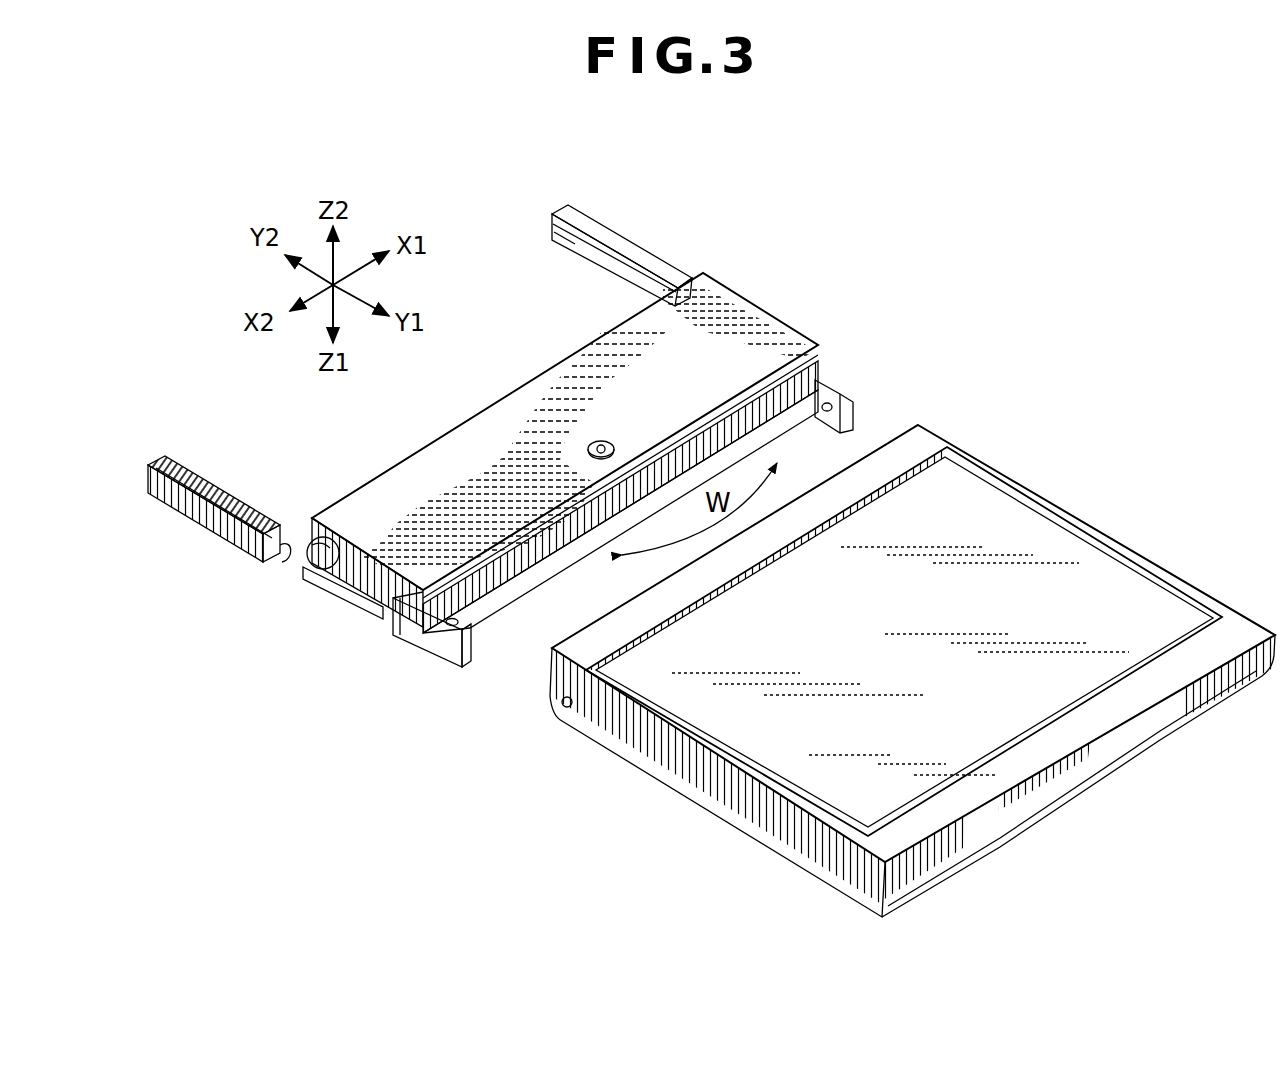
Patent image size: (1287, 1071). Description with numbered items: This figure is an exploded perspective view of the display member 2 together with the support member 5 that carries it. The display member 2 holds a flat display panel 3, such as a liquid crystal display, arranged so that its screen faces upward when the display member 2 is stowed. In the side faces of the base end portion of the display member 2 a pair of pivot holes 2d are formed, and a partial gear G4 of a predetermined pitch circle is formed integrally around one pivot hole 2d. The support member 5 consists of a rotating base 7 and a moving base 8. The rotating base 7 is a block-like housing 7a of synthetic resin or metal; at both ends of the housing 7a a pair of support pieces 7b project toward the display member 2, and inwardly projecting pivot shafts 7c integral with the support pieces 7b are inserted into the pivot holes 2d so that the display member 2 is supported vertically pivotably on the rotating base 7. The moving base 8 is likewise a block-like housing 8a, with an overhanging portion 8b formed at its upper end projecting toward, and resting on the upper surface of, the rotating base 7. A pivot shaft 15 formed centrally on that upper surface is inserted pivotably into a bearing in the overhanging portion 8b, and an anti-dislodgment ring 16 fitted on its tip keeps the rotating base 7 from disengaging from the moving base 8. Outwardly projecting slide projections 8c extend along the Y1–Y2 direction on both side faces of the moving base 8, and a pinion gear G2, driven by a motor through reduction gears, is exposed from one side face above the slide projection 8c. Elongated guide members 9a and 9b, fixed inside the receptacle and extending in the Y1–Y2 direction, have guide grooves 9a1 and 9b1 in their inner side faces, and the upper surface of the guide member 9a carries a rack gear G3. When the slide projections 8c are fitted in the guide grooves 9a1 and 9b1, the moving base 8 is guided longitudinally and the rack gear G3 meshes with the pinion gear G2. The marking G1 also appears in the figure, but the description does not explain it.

The display member 2 is at (1060, 492).
The flat display panel 3 is at (1143, 600).
The pivot holes 2d is at (565, 716).
The support member 5 is at (549, 460).
The rotating base 7 is at (644, 545).
The housing 7a is at (567, 547).
The support pieces 7b is at (830, 382).
The pivot shafts 7c is at (825, 413).
The moving base 8 is at (543, 363).
The housing 8a is at (413, 467).
The overhanging portion 8b is at (410, 590).
The slide projections 8c is at (340, 597).
The guide member 9a is at (183, 517).
The guide groove 9a1 is at (285, 543).
The guide member 9b is at (615, 240).
The guide groove 9b1 is at (572, 253).
The pivot shaft 15 is at (598, 485).
The anti-dislodgment ring 16 is at (608, 446).
The gap G1 is at (487, 613).
The pinion gear G2 is at (308, 562).
The rack gear G3 is at (208, 488).
The partial gear G4 is at (560, 713).